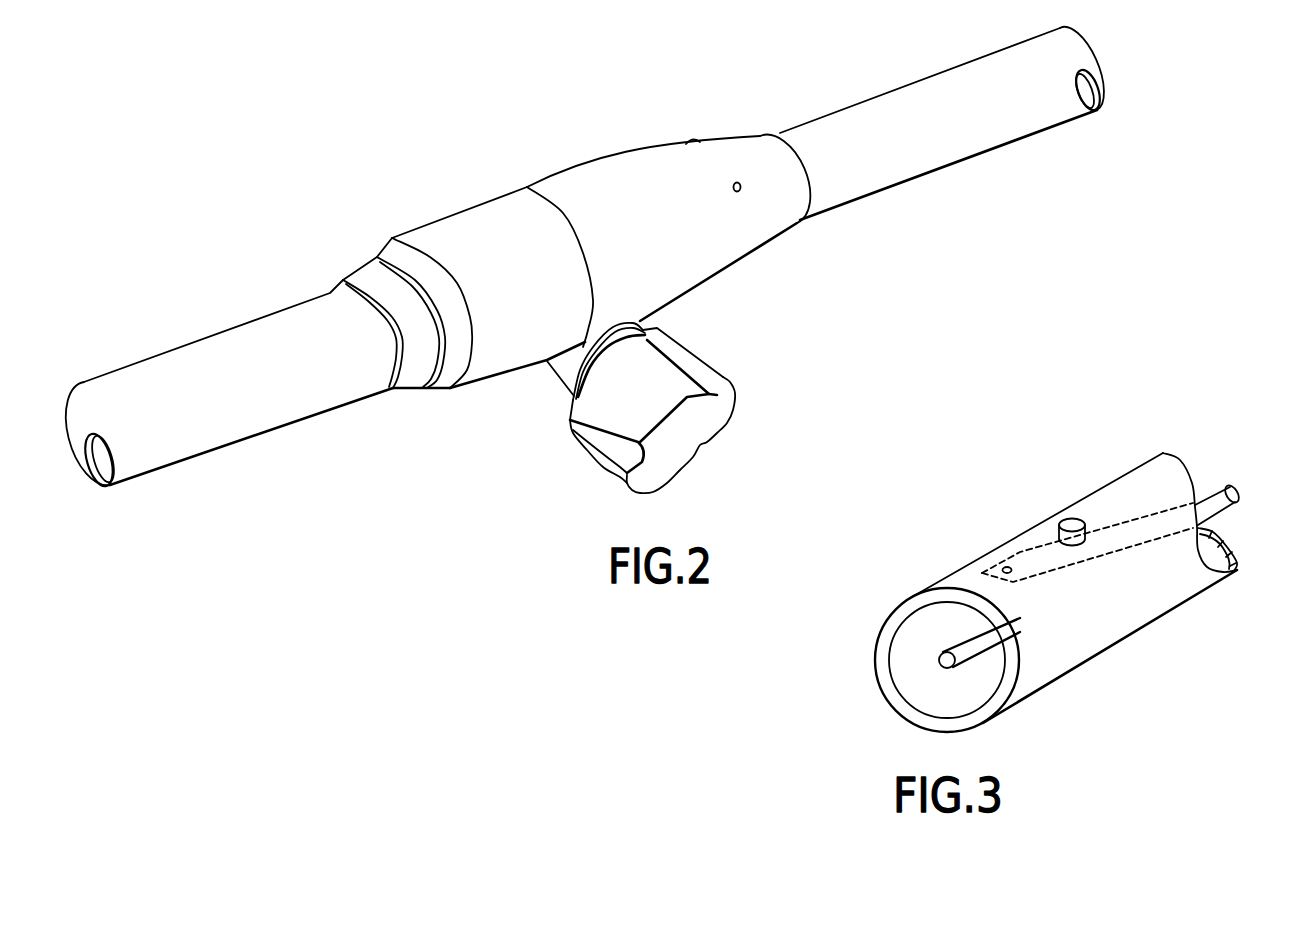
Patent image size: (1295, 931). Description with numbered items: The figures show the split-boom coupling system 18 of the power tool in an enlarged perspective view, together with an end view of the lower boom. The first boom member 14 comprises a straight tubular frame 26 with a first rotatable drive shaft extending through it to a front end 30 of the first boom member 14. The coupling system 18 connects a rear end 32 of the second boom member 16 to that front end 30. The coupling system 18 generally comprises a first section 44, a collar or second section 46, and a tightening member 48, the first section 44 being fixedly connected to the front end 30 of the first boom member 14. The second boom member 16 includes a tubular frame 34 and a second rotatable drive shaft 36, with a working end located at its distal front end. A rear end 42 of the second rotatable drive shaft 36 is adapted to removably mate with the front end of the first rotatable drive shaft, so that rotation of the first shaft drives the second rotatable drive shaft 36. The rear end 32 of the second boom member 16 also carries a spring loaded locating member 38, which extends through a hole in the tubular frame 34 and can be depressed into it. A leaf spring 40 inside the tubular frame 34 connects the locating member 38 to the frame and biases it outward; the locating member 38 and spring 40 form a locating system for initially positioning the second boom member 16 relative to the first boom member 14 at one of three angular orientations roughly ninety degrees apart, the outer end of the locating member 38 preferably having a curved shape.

In FIG. 2, the first boom member 14 is at (897, 98).
In FIG. 2, the second boom member 16 is at (197, 457).
In FIG. 3, the second boom member 16 is at (1122, 640).
In FIG. 2, the coupling system 18 is at (544, 128).
In FIG. 2, the straight tubular frame 26 is at (911, 179).
In FIG. 2, the front end 30 is at (672, 223).
In FIG. 2, the rear end 32 is at (515, 280).
In FIG. 3, the rear end 32 is at (953, 578).
In FIG. 2, the tubular frame 34 is at (263, 432).
In FIG. 3, the tubular frame 34 is at (1197, 590).
In FIG. 3, the second rotatable drive shaft 36 is at (1207, 493).
In FIG. 3, the spring loaded locating member 38 is at (1070, 518).
In FIG. 3, the leaf spring 40 is at (1019, 551).
In FIG. 3, the rear end 42 is at (945, 657).
In FIG. 2, the first section 44 is at (737, 270).
In FIG. 2, the collar 46 is at (500, 380).
In FIG. 2, the tightening member 48 is at (707, 442).